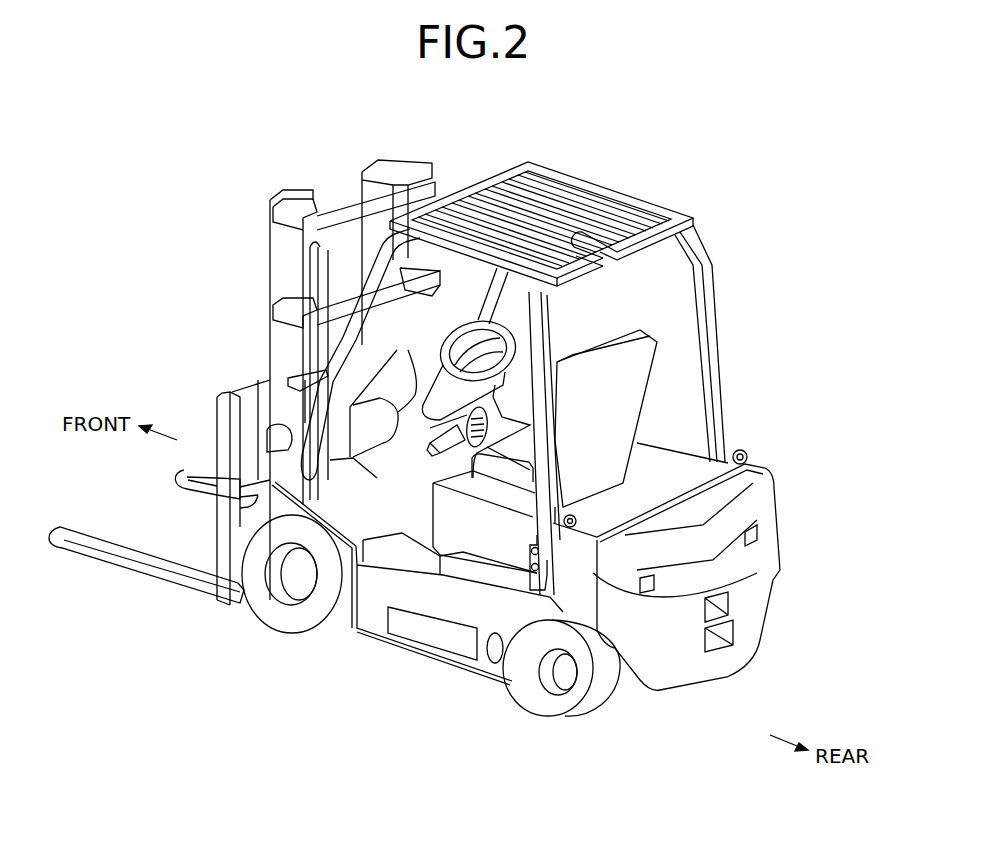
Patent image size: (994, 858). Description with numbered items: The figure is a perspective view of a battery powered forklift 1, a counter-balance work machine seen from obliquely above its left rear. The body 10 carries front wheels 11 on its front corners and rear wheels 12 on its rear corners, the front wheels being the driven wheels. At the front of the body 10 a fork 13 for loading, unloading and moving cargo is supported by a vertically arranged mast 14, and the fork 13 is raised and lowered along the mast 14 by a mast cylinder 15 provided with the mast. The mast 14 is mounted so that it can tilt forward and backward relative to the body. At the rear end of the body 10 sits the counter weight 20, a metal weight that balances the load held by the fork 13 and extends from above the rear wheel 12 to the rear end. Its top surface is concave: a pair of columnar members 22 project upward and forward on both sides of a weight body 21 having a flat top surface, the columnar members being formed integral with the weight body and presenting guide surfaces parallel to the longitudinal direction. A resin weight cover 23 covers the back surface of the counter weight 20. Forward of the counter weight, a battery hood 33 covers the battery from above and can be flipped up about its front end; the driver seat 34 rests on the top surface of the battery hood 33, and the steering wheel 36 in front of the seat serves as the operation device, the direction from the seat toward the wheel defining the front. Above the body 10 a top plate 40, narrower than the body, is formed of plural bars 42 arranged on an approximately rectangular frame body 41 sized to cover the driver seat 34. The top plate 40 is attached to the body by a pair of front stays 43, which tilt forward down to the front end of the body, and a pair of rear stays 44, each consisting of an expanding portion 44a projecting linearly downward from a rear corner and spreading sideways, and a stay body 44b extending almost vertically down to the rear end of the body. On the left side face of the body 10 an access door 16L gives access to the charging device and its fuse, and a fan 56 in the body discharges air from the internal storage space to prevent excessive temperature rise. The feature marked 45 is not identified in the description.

The battery powered forklift 1 is at (222, 163).
The body 10 is at (486, 664).
The front wheels 11 is at (272, 611).
The rear wheels 12 is at (544, 696).
The fork 13 is at (118, 547).
The mast 14 is at (373, 165).
The mast cylinder 15 is at (315, 266).
The access door 16L is at (428, 636).
The counter weight 20 is at (847, 538).
The weight body 21 is at (755, 590).
The columnar members 22 is at (770, 510).
The resin weight cover 23 is at (755, 492).
The battery hood 33 is at (673, 455).
The driver seat 34 is at (616, 342).
The steering wheel 36 is at (500, 333).
The top plate 40 is at (637, 137).
The frame body 41 is at (617, 197).
The bars 42 is at (581, 202).
The front stays 43 is at (350, 336).
The rear stays 44 is at (800, 232).
The expanding portion 44a is at (702, 245).
The stay body 44b is at (720, 378).
The notch 45 is at (622, 245).
The fan 56 is at (498, 665).